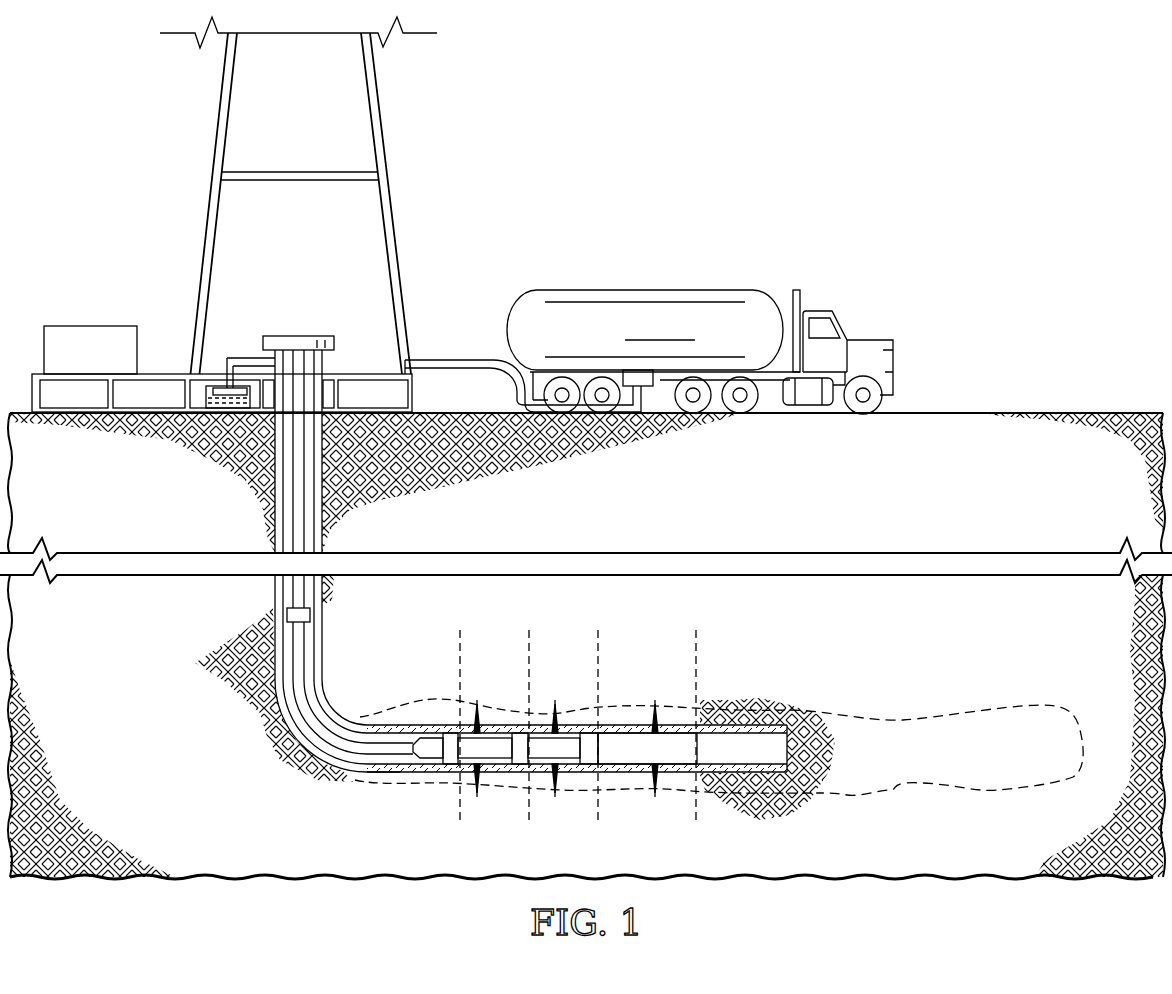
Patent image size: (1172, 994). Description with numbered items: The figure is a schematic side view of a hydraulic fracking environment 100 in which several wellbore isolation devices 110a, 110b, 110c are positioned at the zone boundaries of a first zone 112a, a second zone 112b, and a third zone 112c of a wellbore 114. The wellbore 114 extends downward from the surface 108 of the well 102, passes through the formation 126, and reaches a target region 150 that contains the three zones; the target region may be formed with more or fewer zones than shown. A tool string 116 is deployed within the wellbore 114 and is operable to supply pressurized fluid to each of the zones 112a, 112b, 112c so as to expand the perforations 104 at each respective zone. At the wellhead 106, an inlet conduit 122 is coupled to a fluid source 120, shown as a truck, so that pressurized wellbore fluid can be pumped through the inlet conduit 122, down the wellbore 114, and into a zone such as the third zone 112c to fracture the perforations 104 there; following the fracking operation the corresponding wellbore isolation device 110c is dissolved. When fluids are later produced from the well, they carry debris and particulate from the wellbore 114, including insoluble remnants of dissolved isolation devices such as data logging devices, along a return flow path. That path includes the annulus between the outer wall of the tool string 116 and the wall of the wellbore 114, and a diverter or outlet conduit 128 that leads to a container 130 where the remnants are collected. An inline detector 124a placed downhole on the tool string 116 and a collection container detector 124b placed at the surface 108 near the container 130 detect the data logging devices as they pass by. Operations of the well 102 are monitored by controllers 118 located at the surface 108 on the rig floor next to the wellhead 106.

The hydraulic fracking environment 100 is at (140, 180).
The well 102 is at (322, 413).
The perforations 104 is at (470, 716).
The wellhead 106 is at (300, 336).
The surface 108 is at (940, 413).
The wellbore isolation device 110a is at (432, 750).
The wellbore isolation device 110b is at (488, 748).
The wellbore isolation device 110c is at (602, 752).
The first zone 112a is at (460, 640).
The second zone 112b is at (529, 640).
The third zone 112c is at (598, 640).
The wellbore 114 is at (323, 660).
The tool string 116 is at (372, 770).
The controllers 118 is at (90, 326).
The fluid source 120 is at (818, 313).
The inlet conduit 122 is at (458, 360).
The inline detector 124a is at (312, 622).
The collection container detector 124b is at (222, 384).
The formation 126 is at (207, 795).
The outlet conduit 128 is at (262, 356).
The container 130 is at (215, 414).
The target region 150 is at (853, 712).